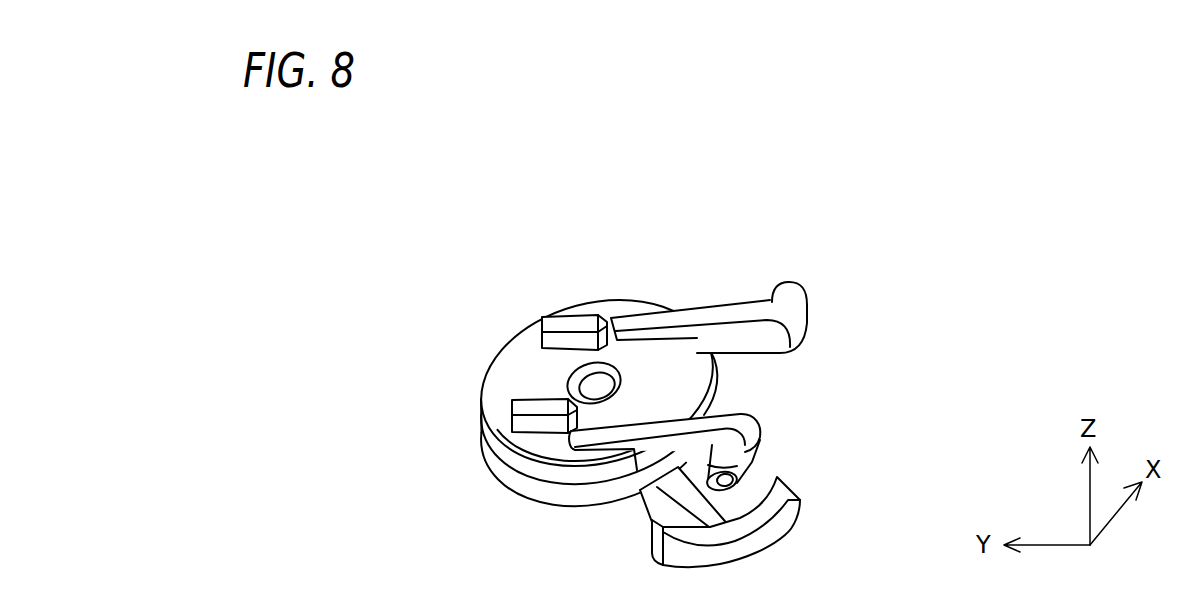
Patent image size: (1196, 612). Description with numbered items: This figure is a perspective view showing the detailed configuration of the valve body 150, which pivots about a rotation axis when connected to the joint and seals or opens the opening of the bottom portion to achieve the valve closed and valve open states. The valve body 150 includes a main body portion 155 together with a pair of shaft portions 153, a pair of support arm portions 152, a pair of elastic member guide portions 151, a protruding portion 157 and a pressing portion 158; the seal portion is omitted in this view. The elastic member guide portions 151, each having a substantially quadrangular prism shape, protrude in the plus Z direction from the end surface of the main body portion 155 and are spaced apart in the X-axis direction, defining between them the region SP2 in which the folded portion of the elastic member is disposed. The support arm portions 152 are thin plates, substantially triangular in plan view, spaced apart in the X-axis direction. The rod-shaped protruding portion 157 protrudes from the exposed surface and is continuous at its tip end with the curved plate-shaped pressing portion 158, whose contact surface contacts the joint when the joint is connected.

The valve body 150 is at (949, 206).
The elastic member guide portions 151 is at (565, 317).
The support arm portions 152 is at (734, 303).
The shaft portions 153 is at (806, 301).
The main body portion 155 is at (650, 357).
The protruding portion 157 is at (658, 508).
The pressing portion 158 is at (780, 513).
The region SP2 is at (520, 365).